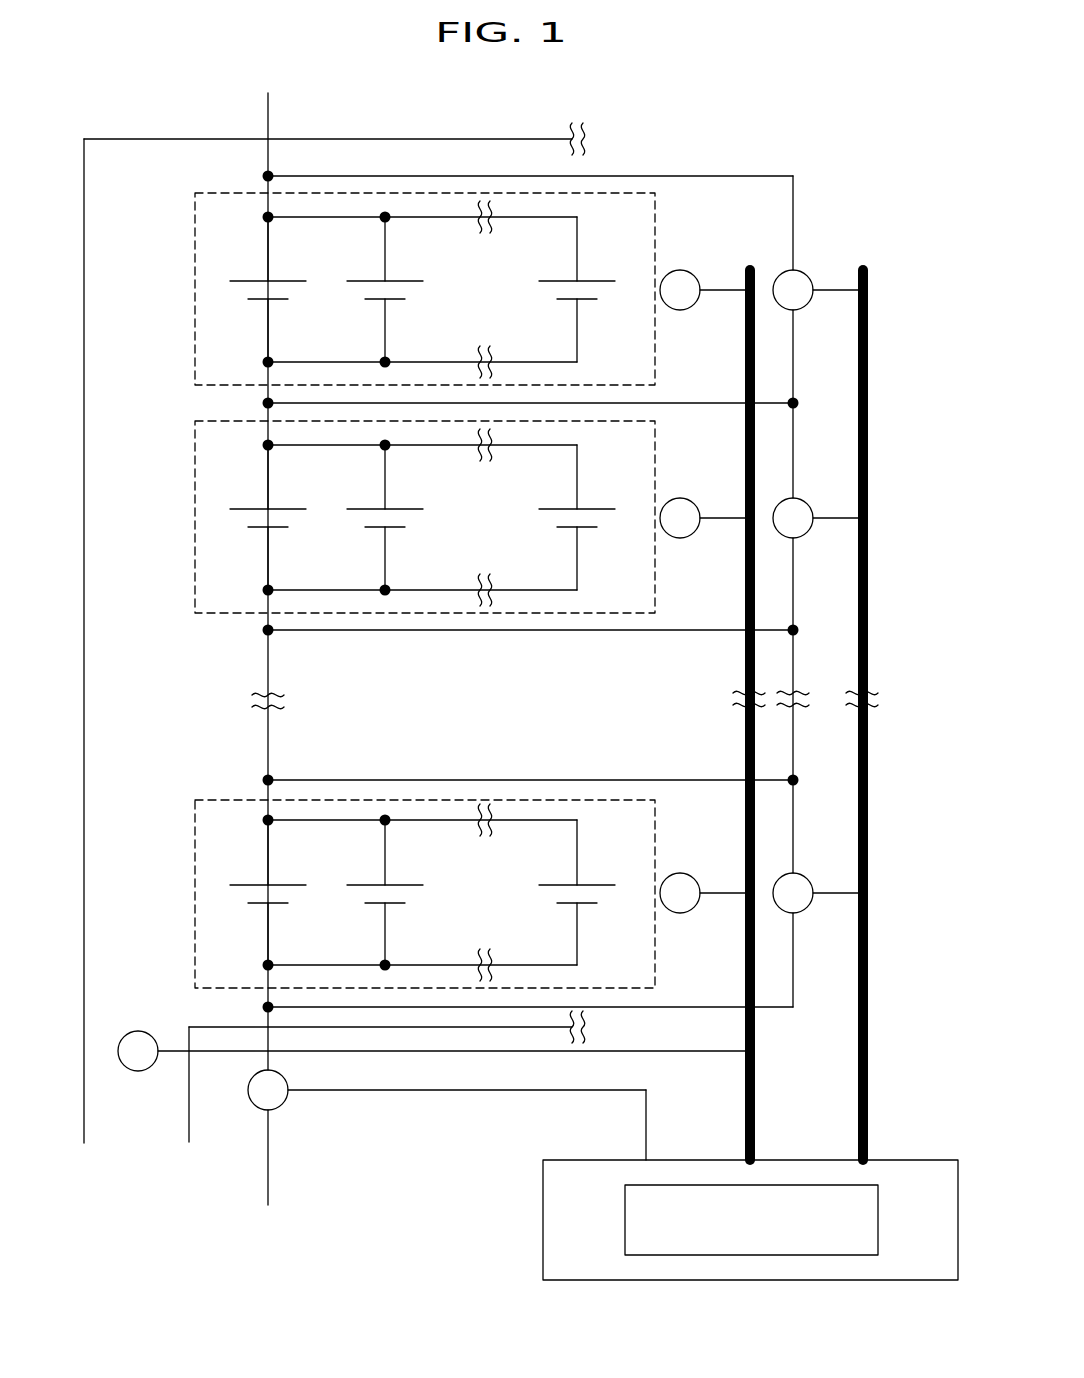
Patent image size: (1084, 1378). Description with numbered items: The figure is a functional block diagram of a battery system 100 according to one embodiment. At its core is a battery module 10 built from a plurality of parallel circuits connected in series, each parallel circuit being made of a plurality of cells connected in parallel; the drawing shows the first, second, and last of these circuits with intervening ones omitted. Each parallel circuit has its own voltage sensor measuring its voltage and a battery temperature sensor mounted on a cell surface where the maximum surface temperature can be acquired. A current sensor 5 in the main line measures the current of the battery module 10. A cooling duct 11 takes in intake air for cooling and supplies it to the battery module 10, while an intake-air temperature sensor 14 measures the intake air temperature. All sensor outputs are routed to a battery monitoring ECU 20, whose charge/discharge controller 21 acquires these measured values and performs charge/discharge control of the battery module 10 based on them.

The battery system 100 is at (122, 103).
The battery module 10 is at (136, 305).
The cooling duct 11 is at (84, 1143).
The intake-air temperature sensor 14 is at (138, 1071).
The current sensor 5 is at (253, 1101).
The battery monitoring ECU 20 is at (543, 1220).
The charge/discharge controller 21 is at (878, 1233).